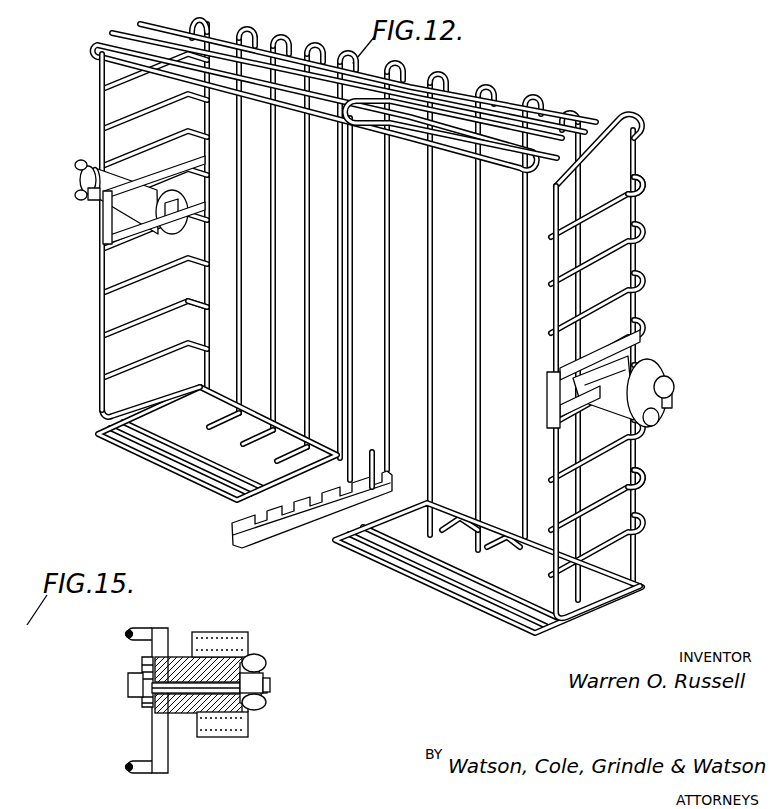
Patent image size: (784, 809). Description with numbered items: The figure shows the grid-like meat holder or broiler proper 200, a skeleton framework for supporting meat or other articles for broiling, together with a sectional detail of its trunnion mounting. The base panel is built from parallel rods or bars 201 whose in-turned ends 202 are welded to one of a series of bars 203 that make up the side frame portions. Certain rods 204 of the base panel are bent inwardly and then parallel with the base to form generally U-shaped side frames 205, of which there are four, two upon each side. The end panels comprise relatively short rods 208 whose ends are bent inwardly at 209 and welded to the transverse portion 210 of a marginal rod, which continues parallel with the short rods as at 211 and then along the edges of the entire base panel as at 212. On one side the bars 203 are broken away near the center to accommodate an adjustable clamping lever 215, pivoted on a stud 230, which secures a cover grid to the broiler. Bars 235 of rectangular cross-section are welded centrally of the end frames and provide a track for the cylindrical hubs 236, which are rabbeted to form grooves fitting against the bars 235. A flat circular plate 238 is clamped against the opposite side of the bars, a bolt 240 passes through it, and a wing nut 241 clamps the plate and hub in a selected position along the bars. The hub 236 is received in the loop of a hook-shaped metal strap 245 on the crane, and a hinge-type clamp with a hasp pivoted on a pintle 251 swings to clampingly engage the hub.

In FIG. 12, the grid-like meat holder or broiler proper 200 is at (582, 96).
In FIG. 12, the parallel rods or bars 201 is at (300, 257).
In FIG. 12, the in-turned ends 202 is at (565, 110).
In FIG. 12, the bars 203 is at (314, 58).
In FIG. 12, the rods 204 is at (205, 243).
In FIG. 15, the rods 204 is at (125, 634).
In FIG. 12, the U-shaped side frames 205 is at (94, 60).
In FIG. 12, the short rods 208 is at (162, 272).
In FIG. 12, the inwardly bent ends 209 is at (568, 6).
In FIG. 12, the transverse portion 210 is at (100, 280).
In FIG. 12, the marginal rod portion 211 is at (135, 403).
In FIG. 12, the marginal rod edge portion 212 is at (318, 433).
In FIG. 12, the adjustable clamping lever 215 is at (238, 530).
In FIG. 12, the stud 230 is at (372, 458).
In FIG. 12, the bars 235 is at (150, 185).
In FIG. 15, the bars 235 is at (165, 750).
In FIG. 12, the cylindrical hub 236 is at (126, 172).
In FIG. 15, the cylindrical hub 236 is at (140, 660).
In FIG. 12, the flat circular plate 238 is at (90, 197).
In FIG. 15, the flat circular plate 238 is at (143, 700).
In FIG. 12, the bolt 240 is at (669, 407).
In FIG. 15, the bolt 240 is at (182, 687).
In FIG. 12, the wing nut 241 is at (80, 178).
In FIG. 15, the wing nut 241 is at (262, 672).
In FIG. 15, the hook-shaped metal straps 245 is at (233, 717).
In FIG. 15, the pintle 251 is at (230, 632).